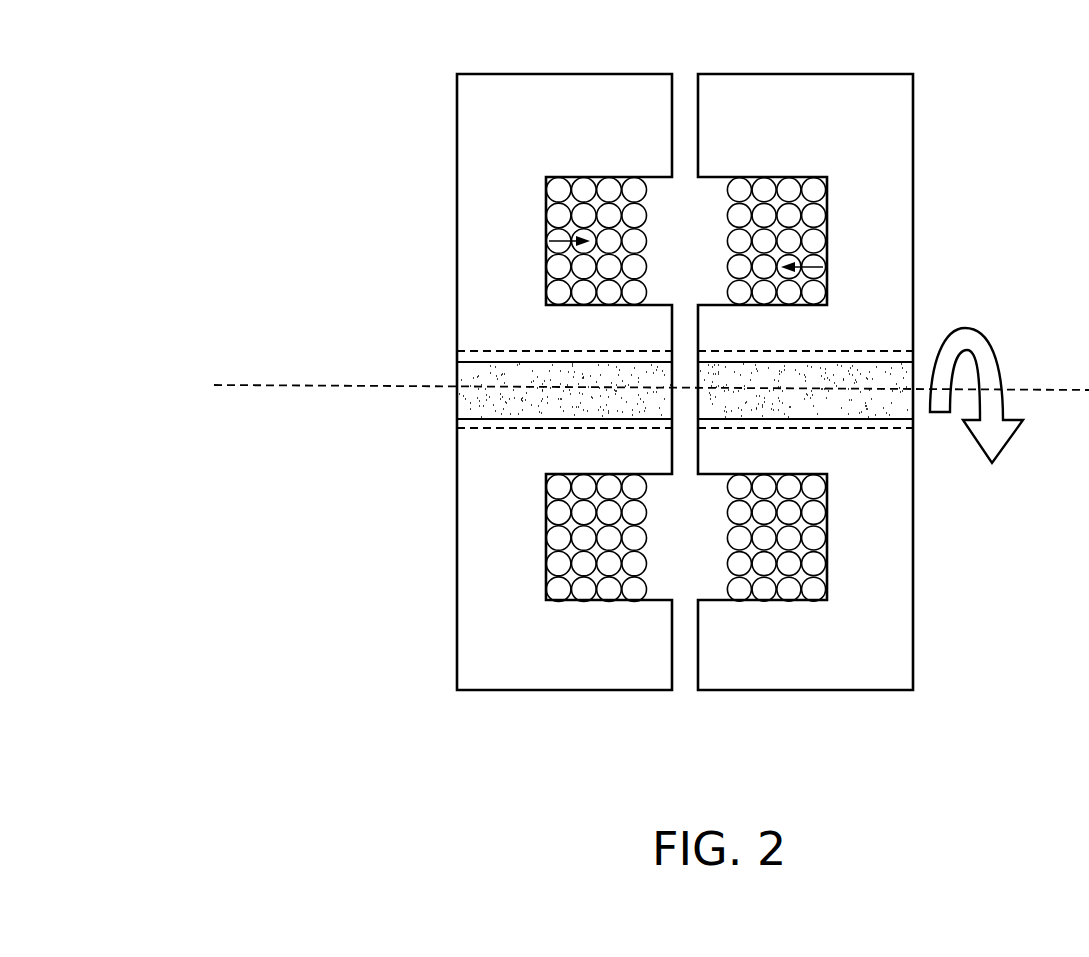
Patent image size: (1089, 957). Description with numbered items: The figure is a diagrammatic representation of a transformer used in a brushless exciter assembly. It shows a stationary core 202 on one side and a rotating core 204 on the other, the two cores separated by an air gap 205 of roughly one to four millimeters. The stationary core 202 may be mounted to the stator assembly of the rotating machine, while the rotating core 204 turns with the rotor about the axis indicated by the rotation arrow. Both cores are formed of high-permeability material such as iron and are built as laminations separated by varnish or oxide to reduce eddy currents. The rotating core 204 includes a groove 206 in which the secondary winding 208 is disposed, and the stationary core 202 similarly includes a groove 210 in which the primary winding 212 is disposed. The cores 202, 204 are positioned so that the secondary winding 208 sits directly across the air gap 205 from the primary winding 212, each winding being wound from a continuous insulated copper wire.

The stationary core 202 is at (518, 680).
The rotating core 204 is at (893, 680).
The air gap 205 is at (692, 66).
The groove 206 is at (705, 600).
The secondary winding 208 is at (810, 215).
The groove 210 is at (662, 534).
The primary winding 212 is at (557, 187).